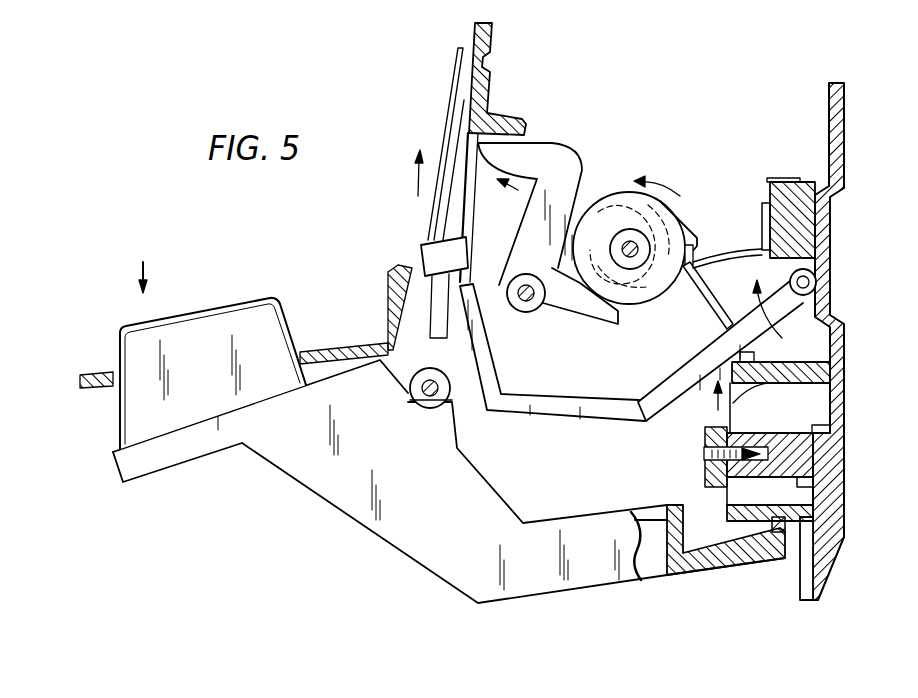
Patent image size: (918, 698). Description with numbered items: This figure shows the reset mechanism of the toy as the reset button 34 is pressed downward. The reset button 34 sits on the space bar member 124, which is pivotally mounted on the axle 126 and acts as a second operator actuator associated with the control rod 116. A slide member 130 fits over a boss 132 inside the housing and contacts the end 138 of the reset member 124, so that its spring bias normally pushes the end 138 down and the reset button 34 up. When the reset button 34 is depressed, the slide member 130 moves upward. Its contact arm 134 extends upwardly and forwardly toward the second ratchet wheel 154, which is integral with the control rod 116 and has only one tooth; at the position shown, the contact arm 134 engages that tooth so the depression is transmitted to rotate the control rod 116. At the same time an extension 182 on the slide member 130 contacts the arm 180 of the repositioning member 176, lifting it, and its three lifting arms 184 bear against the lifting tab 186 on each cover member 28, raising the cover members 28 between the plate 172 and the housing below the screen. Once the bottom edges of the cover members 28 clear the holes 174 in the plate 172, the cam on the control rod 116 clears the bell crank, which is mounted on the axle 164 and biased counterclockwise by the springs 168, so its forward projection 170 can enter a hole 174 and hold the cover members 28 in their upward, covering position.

The cover member 28 is at (457, 74).
The reset button 34 is at (237, 313).
The control rod 116 is at (655, 219).
The space bar member 124 is at (176, 468).
The axle 126 is at (430, 405).
The slide member 130 is at (716, 402).
The boss 132 is at (797, 417).
The contact arm 134 is at (710, 307).
The end of the reset member 138 is at (773, 530).
The second ratchet wheel 154 is at (682, 212).
The axle 164 is at (528, 302).
The springs 168 is at (733, 250).
The forward projection 170 is at (503, 155).
The plate 172 is at (492, 72).
The holes 174 is at (467, 176).
The repositioning member 176 is at (545, 403).
The arm 180 is at (658, 382).
The extension 182 is at (771, 338).
The lifting arms 184 is at (458, 287).
The lifting tab 186 is at (440, 253).